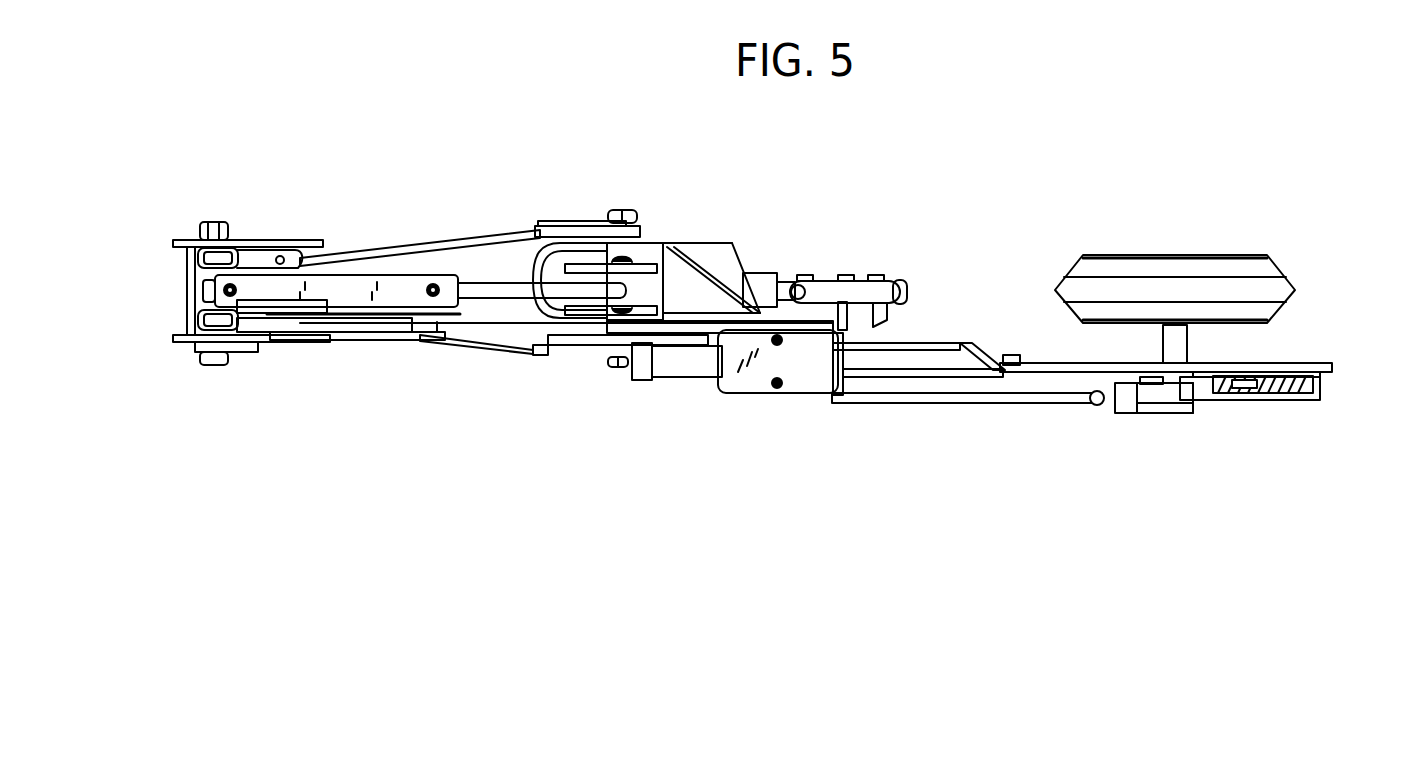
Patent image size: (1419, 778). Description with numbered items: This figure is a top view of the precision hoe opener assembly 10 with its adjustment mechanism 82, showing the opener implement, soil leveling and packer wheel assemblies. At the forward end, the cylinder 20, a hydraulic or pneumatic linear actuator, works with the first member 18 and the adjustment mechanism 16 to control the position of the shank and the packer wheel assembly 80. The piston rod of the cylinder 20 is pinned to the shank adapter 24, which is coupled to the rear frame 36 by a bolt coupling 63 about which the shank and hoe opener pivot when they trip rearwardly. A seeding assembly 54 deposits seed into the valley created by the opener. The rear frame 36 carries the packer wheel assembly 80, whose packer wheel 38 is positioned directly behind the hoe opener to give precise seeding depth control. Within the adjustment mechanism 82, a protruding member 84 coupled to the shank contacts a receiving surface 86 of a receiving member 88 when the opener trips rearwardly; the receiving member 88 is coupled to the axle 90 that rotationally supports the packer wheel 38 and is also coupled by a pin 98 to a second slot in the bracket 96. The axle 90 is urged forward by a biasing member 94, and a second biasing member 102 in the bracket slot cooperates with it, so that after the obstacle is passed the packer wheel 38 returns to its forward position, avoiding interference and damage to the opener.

The precision hoe opener assembly 10 is at (752, 478).
The adjustment mechanism 16 is at (510, 245).
The first member 18 is at (423, 333).
The cylinder 20 is at (328, 280).
The shank adapter 24 is at (603, 313).
The rear frame 36 is at (723, 268).
The packer wheel 38 is at (1078, 268).
The seeding assembly 54 is at (878, 287).
The bolt coupling 63 is at (623, 212).
The packer wheel assembly 80 is at (1119, 358).
The adjustment mechanism 82 is at (1174, 470).
The protruding member 84 is at (1025, 405).
The receiving surface 86 is at (1152, 427).
The receiving member 88 is at (1127, 413).
The axle 90 is at (1173, 345).
The biasing member 94 is at (1290, 439).
The bracket 96 is at (1328, 372).
The pin 98 is at (1175, 415).
The biasing member 102 is at (1297, 395).